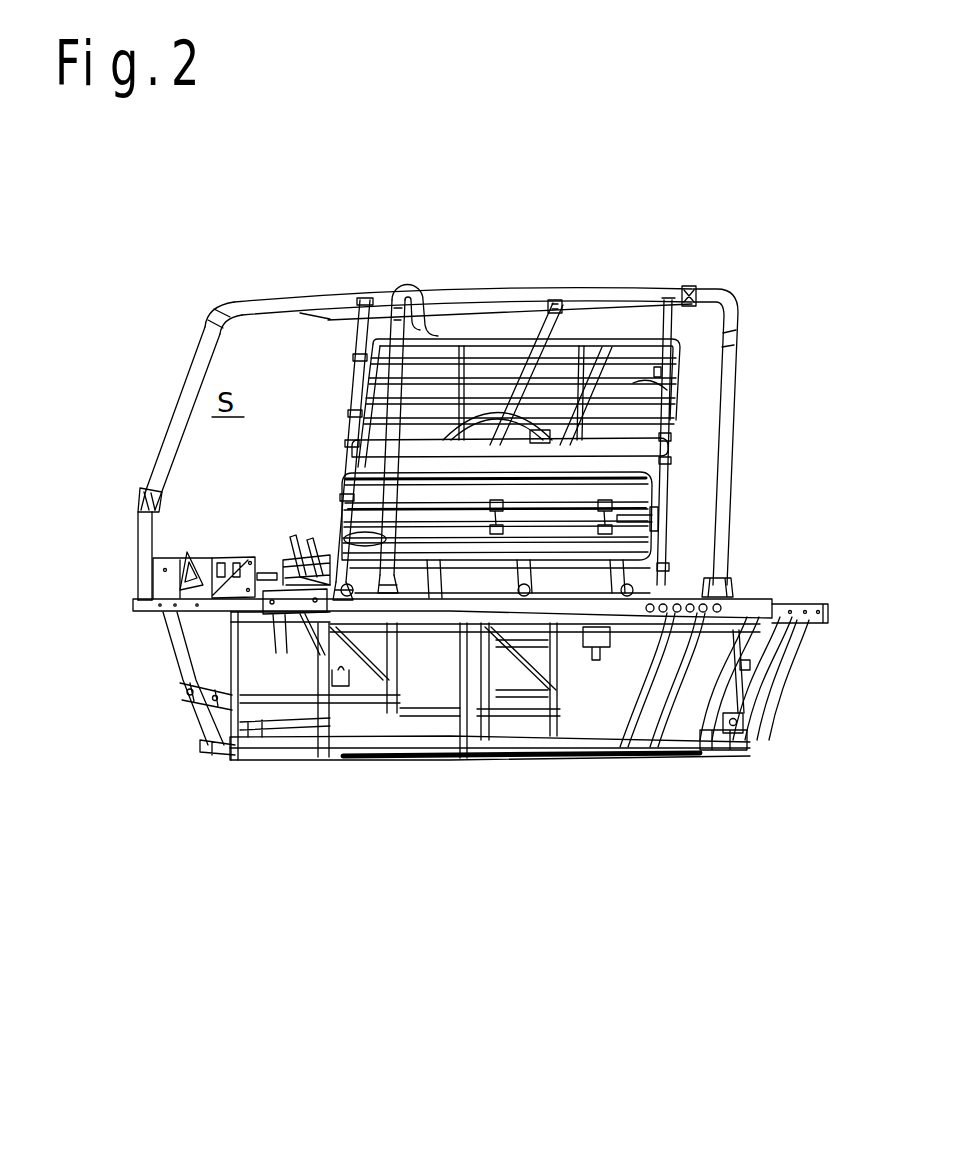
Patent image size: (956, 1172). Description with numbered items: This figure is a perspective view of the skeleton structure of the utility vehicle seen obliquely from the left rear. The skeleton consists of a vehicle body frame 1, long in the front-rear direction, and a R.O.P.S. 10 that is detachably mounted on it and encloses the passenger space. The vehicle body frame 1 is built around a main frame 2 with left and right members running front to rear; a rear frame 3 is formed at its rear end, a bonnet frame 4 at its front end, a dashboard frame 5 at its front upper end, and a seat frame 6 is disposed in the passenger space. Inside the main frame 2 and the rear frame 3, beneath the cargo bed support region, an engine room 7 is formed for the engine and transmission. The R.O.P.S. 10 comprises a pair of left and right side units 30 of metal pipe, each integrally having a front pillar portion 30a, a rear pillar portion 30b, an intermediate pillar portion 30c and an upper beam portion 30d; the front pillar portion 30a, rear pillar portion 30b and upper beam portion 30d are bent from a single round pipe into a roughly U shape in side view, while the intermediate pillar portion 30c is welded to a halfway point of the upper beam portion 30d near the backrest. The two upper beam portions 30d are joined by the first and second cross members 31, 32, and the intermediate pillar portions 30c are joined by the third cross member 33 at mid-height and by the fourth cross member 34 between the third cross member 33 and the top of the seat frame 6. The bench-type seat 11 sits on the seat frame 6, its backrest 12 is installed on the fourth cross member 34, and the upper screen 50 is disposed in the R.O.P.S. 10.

The vehicle body frame 1 is at (308, 842).
The main frame 2 is at (399, 777).
The rear frame 3 is at (706, 767).
The bonnet frame 4 is at (166, 679).
The dashboard frame 5 is at (245, 543).
The seat frame 6 is at (302, 717).
The engine room 7 is at (498, 693).
The R.O.P.S. 10 is at (209, 277).
The bench-type seat 11 is at (290, 603).
The backrest 12 is at (340, 537).
The side unit 30 is at (130, 464).
The front pillar portion 30a is at (178, 424).
The rear pillar portion 30b is at (393, 437).
The intermediate pillar portion 30c is at (357, 343).
The upper beam portion 30d is at (272, 302).
The first cross member 31 is at (430, 310).
The second cross member 32 is at (553, 298).
The third cross member 33 is at (655, 452).
The fourth cross member 34 is at (660, 522).
The upper screen 50 is at (672, 290).